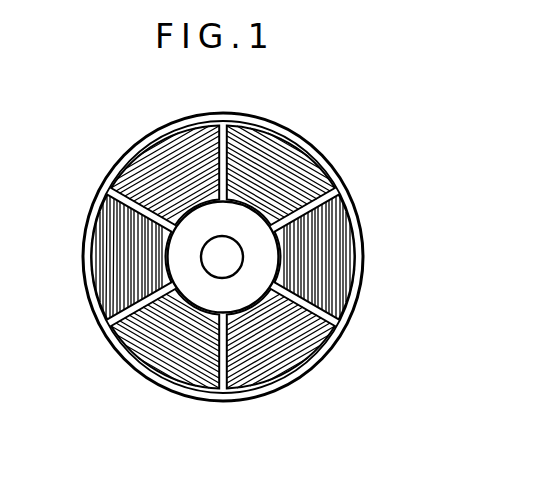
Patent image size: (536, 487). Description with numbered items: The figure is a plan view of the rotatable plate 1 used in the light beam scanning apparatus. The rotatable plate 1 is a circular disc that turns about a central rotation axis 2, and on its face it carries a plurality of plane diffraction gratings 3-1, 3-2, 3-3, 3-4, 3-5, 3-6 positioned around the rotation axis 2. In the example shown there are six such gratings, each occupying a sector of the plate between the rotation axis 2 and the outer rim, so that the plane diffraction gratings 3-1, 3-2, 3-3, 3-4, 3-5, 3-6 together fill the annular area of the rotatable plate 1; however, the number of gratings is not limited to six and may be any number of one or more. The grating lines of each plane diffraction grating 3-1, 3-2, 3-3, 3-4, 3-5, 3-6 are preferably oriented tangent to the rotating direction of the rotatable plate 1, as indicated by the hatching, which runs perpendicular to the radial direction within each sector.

The rotatable plate 1 is at (160, 130).
The rotation axis 2 is at (222, 257).
The plane diffraction grating 3-1 is at (337, 264).
The plane diffraction grating 3-2 is at (292, 357).
The plane diffraction grating 3-3 is at (158, 362).
The plane diffraction grating 3-4 is at (97, 267).
The plane diffraction grating 3-5 is at (130, 178).
The plane diffraction grating 3-6 is at (305, 174).